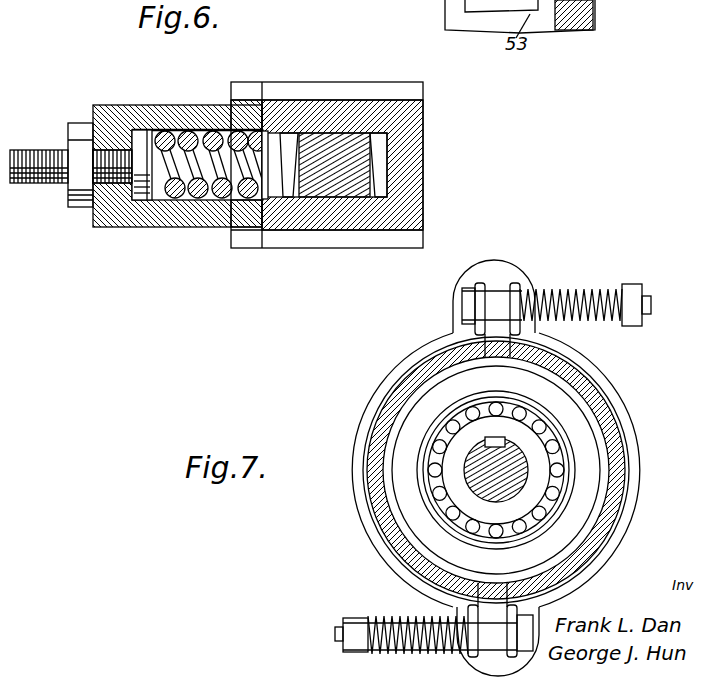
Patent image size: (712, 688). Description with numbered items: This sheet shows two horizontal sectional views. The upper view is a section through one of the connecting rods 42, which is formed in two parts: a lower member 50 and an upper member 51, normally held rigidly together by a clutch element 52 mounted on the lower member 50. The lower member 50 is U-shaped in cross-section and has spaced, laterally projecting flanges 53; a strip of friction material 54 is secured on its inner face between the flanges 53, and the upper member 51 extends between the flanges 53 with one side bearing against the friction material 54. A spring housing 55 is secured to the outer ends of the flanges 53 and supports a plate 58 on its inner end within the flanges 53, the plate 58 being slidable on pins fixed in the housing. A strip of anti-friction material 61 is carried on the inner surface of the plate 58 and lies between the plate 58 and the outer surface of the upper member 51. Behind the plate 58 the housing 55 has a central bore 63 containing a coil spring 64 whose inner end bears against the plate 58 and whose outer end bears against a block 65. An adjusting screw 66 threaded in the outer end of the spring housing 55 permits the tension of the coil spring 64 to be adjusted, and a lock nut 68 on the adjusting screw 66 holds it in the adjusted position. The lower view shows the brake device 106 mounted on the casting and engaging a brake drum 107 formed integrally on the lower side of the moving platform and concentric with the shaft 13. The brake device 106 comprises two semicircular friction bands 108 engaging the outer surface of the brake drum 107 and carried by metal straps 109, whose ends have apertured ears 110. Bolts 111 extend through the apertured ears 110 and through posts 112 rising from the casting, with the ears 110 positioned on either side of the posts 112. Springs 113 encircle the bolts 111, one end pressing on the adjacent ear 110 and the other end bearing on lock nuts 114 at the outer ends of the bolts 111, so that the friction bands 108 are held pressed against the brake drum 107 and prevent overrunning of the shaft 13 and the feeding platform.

In FIG. 6, the connecting rod 42 is at (423, 108).
In FIG. 6, the lower member 50 is at (423, 206).
In FIG. 6, the upper member 51 is at (329, 145).
In FIG. 6, the flanges 53 is at (343, 102).
In FIG. 6, the friction material 54 is at (423, 172).
In FIG. 6, the clutch element 52 is at (174, 134).
In FIG. 6, the spring housing 55 is at (176, 128).
In FIG. 6, the central bore 63 is at (203, 128).
In FIG. 6, the coil spring 64 is at (170, 133).
In FIG. 6, the block 65 is at (146, 195).
In FIG. 6, the adjusting screw 66 is at (40, 158).
In FIG. 6, the lock nut 68 is at (78, 207).
In FIG. 6, the plate 58 is at (254, 200).
In FIG. 6, the anti-friction material 61 is at (288, 196).
In FIG. 7, the shaft 13 is at (485, 440).
In FIG. 7, the brake device 106 is at (360, 492).
In FIG. 7, the brake drum 107 is at (616, 470).
In FIG. 7, the friction bands 108 is at (622, 518).
In FIG. 7, the metal straps 109 is at (364, 414).
In FIG. 7, the apertured ears 110 is at (512, 294).
In FIG. 7, the bolts 111 is at (652, 306).
In FIG. 7, the posts 112 is at (493, 292).
In FIG. 7, the springs 113 is at (573, 292).
In FIG. 7, the lock nuts 114 is at (633, 292).